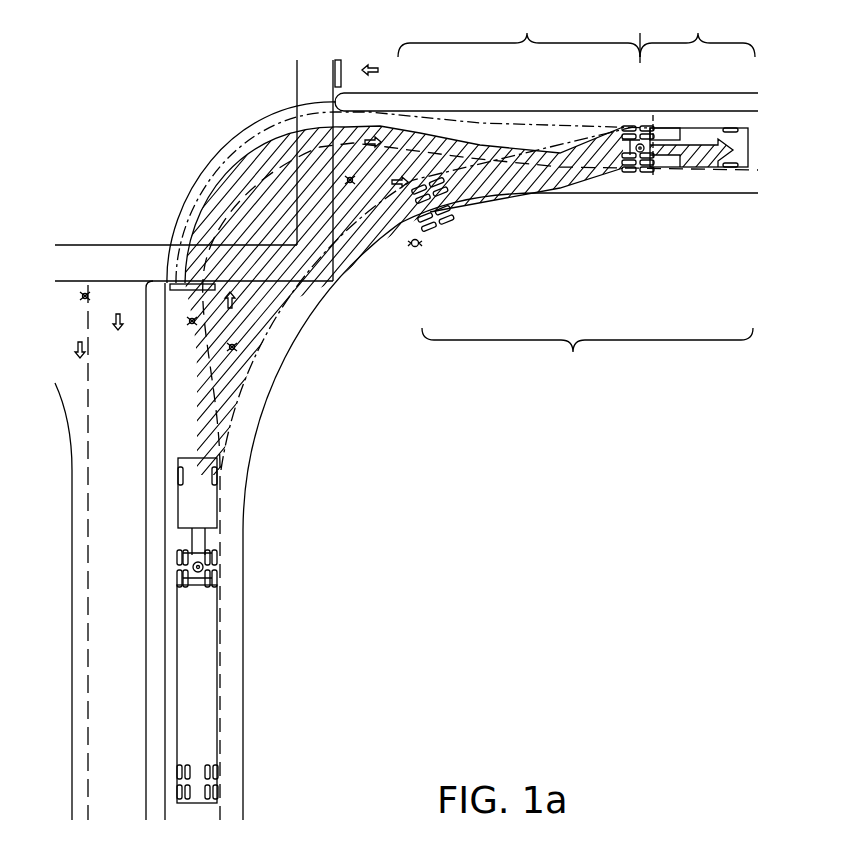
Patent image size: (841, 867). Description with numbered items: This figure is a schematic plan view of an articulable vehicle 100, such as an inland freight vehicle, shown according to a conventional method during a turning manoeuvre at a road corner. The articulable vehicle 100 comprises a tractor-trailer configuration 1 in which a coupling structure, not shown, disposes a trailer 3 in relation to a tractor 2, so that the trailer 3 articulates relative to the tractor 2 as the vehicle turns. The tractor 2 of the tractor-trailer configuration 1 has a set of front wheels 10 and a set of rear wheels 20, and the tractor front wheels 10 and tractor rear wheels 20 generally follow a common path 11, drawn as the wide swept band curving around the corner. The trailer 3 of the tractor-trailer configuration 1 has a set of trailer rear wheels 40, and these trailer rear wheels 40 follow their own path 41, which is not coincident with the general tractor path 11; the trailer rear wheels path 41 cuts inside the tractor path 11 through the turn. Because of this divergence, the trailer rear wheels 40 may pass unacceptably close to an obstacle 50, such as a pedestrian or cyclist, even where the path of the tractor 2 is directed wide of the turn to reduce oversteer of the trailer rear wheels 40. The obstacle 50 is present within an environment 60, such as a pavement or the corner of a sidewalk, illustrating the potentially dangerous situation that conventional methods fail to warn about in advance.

The tractor-trailer configuration 1 is at (587, 352).
The tractor 2 is at (697, 34).
The trailer 3 is at (519, 37).
The front wheels 10 is at (731, 124).
The path 11 is at (250, 178).
The rear wheels 20 is at (655, 108).
The trailer rear wheels 40 is at (424, 181).
The trailer rear wheels path 41 is at (368, 213).
The obstacle 50 is at (415, 252).
The environment 60 is at (592, 178).
The articulable vehicle 100 is at (757, 147).